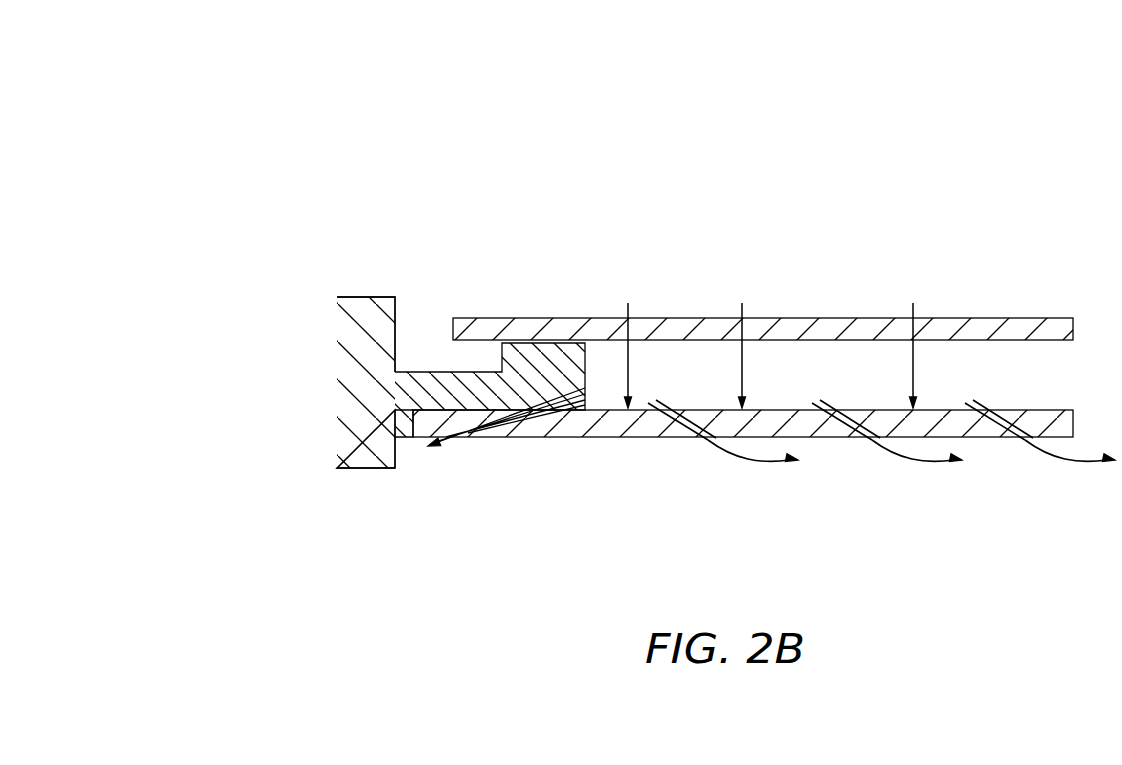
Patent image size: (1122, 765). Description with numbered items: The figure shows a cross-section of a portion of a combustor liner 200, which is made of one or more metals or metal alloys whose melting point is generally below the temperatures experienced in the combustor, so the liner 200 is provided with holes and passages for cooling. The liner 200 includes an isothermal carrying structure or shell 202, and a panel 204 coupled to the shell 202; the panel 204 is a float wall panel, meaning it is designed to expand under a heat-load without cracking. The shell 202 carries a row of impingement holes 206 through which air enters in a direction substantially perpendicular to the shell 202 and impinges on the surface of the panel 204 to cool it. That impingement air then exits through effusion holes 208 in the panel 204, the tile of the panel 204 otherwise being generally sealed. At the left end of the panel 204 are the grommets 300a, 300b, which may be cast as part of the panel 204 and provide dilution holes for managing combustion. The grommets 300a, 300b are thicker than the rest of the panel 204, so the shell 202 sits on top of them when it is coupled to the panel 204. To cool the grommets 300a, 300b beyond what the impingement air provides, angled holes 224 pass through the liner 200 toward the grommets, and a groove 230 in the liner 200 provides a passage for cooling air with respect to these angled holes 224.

The liner 200 is at (764, 298).
The isothermal carrying structure/shell 202 is at (1003, 318).
The panel 204 is at (603, 440).
The impingement holes 206 is at (617, 308).
The effusion holes 208 is at (687, 440).
The angled holes 224 is at (528, 440).
The groove 230 is at (440, 298).
The grommet 300a is at (369, 378).
The grommet 300b is at (363, 370).